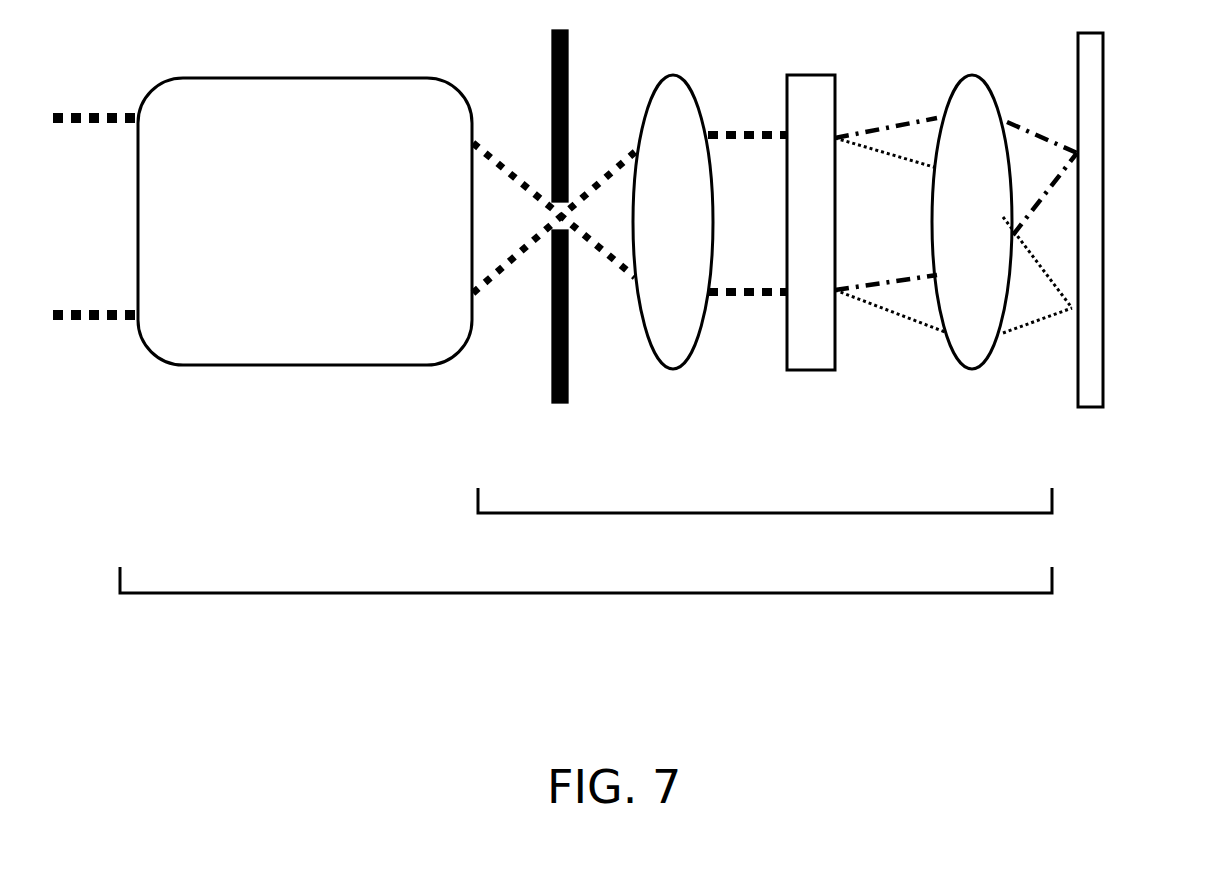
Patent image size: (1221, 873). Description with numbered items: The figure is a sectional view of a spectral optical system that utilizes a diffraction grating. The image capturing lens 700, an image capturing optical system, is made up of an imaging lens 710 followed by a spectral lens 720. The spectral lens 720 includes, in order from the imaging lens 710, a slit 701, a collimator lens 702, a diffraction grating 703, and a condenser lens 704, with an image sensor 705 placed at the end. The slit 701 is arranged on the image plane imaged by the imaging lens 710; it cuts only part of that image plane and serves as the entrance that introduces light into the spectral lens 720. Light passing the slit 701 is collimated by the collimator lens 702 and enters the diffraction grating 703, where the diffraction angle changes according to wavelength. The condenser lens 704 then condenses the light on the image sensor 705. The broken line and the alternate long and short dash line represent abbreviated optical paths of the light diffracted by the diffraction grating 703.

The image capturing lens 700 is at (586, 604).
The slit 701 is at (550, 347).
The collimator lens 702 is at (660, 345).
The diffraction grating 703 is at (815, 367).
The condenser lens 704 is at (972, 367).
The image sensor 705 is at (1098, 363).
The imaging lens 710 is at (233, 365).
The spectral lens 720 is at (765, 524).